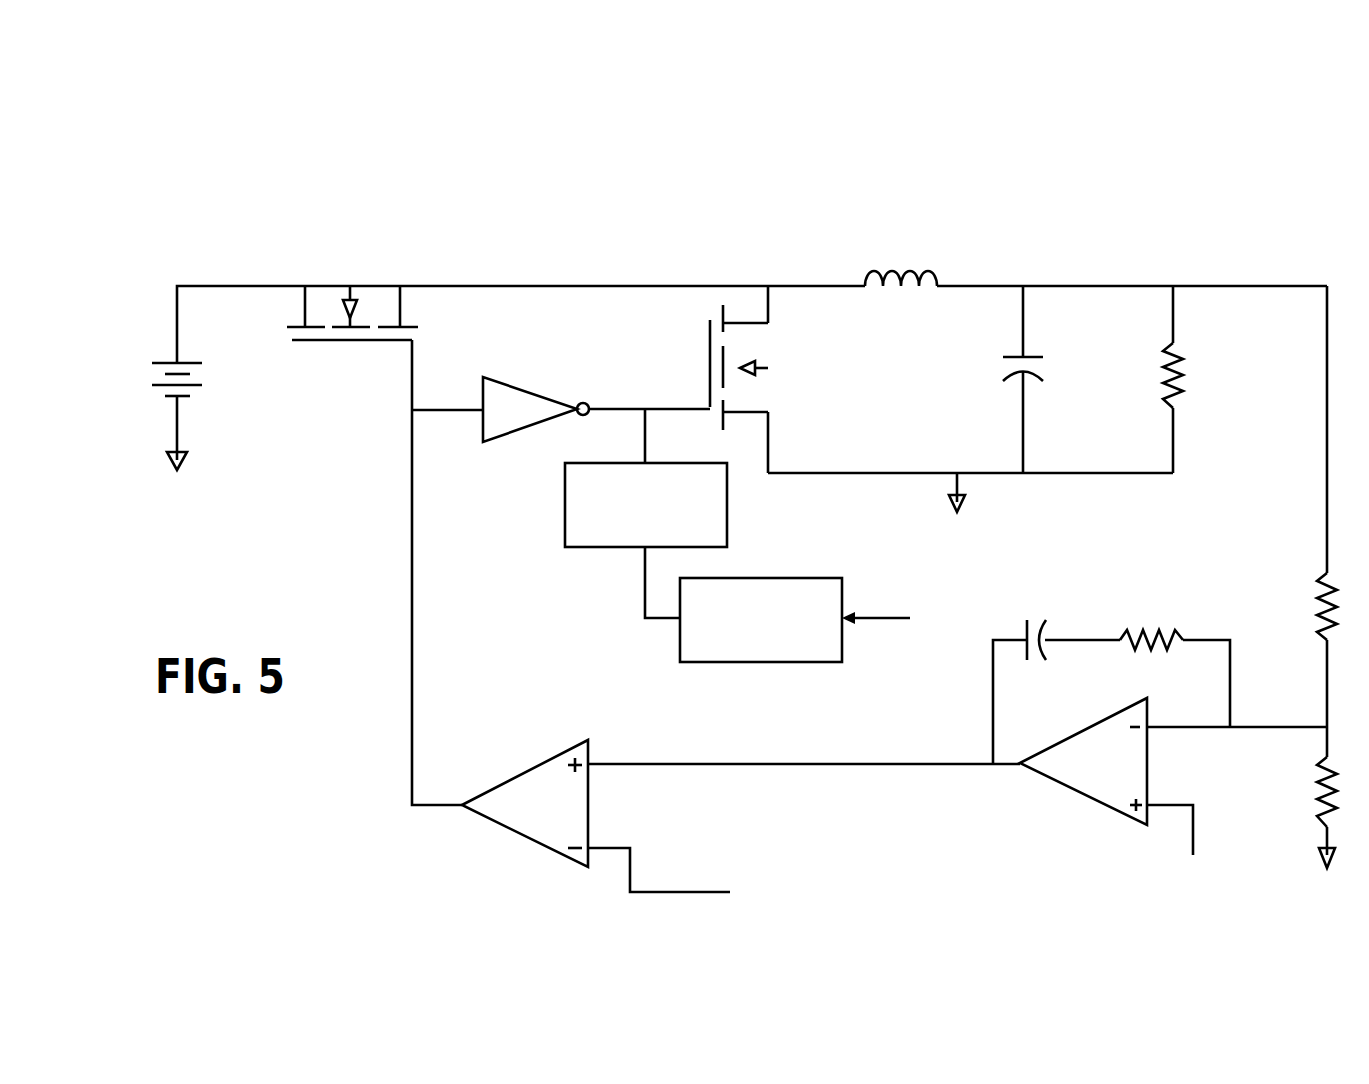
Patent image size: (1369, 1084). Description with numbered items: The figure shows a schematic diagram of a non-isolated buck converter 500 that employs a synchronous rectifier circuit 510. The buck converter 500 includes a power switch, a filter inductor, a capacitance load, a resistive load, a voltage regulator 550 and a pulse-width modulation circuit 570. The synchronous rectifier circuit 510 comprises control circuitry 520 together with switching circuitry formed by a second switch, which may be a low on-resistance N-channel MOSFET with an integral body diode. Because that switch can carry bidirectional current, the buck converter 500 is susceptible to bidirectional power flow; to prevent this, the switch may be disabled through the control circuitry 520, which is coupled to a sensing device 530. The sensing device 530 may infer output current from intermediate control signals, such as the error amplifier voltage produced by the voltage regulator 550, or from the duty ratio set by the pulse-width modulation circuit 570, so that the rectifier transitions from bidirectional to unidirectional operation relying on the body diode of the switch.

The non-isolated buck converter 500 is at (536, 195).
The synchronous rectifier circuit 510 is at (646, 380).
The control circuitry 520 is at (565, 503).
The sensing device 530 is at (783, 578).
The voltage regulator 550 is at (1170, 614).
The PWM circuit 570 is at (505, 834).